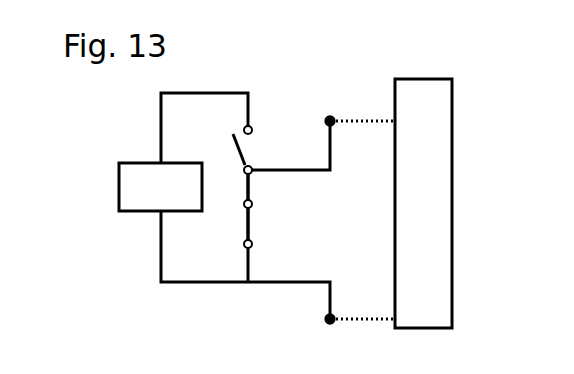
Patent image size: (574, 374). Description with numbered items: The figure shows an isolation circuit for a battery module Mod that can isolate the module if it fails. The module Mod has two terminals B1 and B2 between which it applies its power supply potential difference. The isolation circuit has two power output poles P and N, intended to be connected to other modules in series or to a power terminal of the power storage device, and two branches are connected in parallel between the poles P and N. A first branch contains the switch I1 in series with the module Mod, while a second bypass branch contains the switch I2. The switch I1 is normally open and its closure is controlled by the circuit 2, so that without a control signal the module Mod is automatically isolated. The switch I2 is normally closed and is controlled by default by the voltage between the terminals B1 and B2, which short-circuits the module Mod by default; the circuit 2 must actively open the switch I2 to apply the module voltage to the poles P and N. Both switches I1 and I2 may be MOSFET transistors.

The module Mod is at (119, 185).
The terminal B1 is at (251, 127).
The terminal B2 is at (247, 244).
The switch I1 is at (255, 145).
The switch I2 is at (255, 230).
The power output pole P is at (328, 116).
The power output pole N is at (325, 318).
The circuit 2 is at (453, 203).